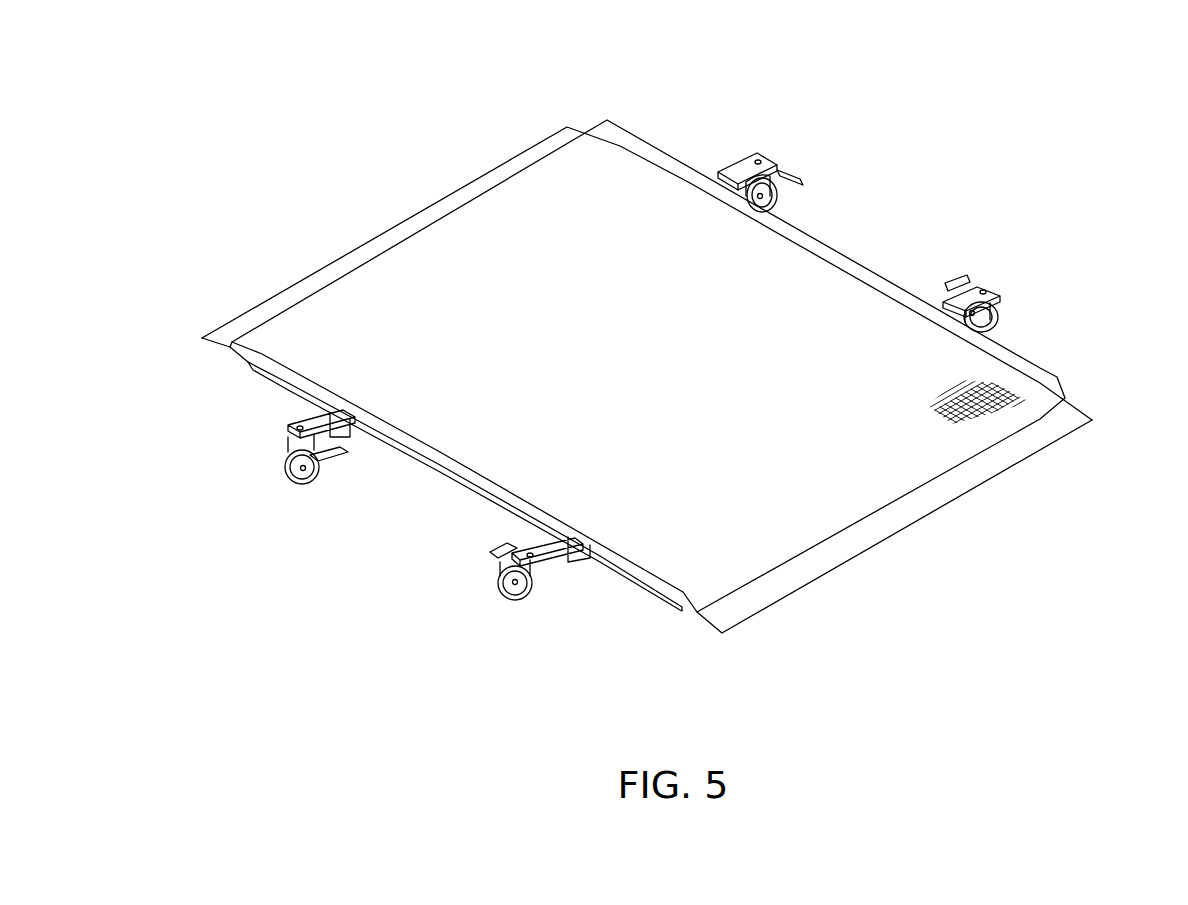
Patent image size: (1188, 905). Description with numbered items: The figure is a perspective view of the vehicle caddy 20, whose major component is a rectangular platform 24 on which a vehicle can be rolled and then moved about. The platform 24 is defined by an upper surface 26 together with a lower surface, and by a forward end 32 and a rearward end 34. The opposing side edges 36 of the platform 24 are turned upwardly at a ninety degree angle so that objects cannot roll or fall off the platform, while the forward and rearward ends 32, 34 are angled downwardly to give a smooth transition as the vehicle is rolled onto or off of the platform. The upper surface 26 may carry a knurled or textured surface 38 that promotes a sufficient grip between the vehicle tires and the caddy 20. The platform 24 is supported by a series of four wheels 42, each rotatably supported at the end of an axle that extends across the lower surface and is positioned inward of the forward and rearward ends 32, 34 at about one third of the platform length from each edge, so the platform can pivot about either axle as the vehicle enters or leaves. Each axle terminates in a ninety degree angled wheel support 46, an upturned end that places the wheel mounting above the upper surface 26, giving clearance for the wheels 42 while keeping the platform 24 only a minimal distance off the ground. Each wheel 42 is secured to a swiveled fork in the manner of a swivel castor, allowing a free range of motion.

The caddy 20 is at (957, 152).
The platform 24 is at (1000, 354).
The upper surface 26 is at (622, 347).
The forward end 32 is at (1017, 450).
The rearward end 34 is at (227, 329).
The side edge 36 is at (492, 490).
The knurled or textured surface 38 is at (1000, 403).
The wheel 42 is at (790, 200).
The wheel support 46 is at (790, 142).